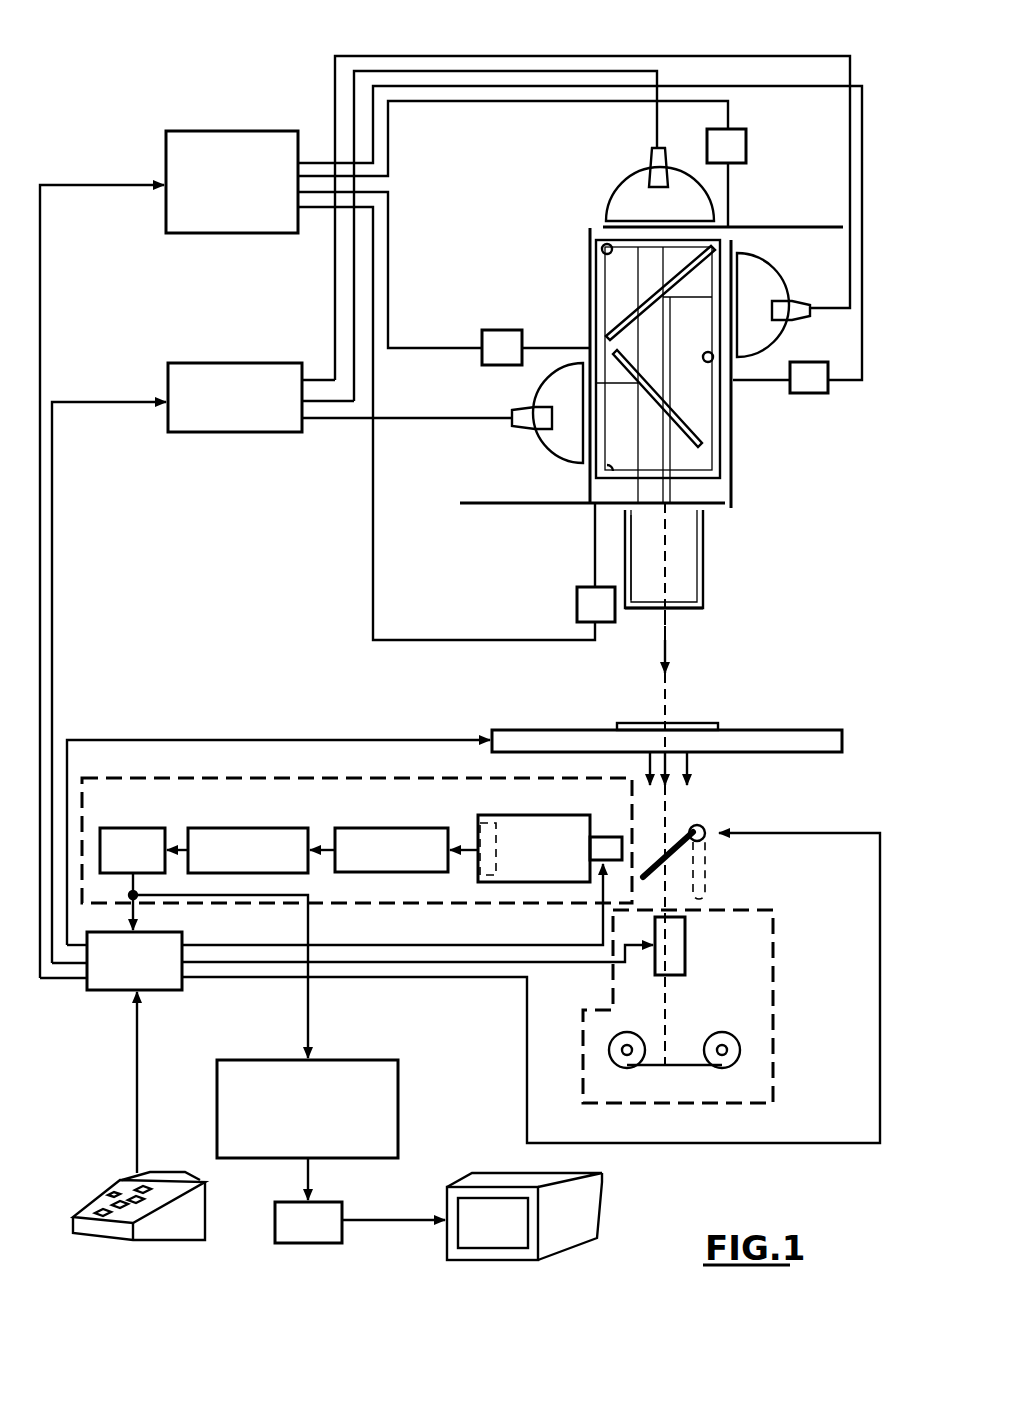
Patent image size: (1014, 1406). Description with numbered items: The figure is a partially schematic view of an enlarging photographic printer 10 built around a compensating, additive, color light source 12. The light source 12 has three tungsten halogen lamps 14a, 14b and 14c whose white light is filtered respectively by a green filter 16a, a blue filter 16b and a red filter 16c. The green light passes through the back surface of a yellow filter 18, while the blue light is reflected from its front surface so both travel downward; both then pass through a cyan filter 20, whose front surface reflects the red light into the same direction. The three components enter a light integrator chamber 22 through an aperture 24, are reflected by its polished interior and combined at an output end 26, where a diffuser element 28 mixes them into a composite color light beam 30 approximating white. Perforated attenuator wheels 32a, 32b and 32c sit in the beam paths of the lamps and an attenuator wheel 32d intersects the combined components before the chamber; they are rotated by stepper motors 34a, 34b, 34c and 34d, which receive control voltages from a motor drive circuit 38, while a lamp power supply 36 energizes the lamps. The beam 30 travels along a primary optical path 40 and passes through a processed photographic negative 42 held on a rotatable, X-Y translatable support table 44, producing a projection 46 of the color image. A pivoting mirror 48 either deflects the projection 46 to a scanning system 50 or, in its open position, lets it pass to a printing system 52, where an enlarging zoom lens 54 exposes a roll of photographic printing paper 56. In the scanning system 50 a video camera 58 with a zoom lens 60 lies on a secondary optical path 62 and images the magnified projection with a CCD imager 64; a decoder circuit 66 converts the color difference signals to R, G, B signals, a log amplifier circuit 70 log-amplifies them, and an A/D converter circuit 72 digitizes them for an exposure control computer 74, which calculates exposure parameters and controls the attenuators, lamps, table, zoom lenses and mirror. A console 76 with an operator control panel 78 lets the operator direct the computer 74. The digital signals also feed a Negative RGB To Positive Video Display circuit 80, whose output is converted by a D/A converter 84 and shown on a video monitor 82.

The enlarging photographic printer 10 is at (232, 38).
The compensating additive color light source 12 is at (842, 464).
The lamp 14a is at (630, 186).
The lamp 14b is at (765, 280).
The lamp 14c is at (540, 400).
The green filter 16a is at (604, 247).
The blue filter 16b is at (775, 356).
The red filter 16c is at (605, 479).
The yellow filter 18 is at (633, 316).
The cyan filter 20 is at (695, 434).
The light integrator chamber 22 is at (705, 560).
The aperture 24 is at (690, 533).
The output end 26 is at (704, 606).
The diffuser element 28 is at (678, 612).
The composite color light beam 30 is at (663, 642).
The attenuator wheel 32a is at (755, 228).
The attenuator wheel 32b is at (735, 460).
The attenuator wheel 32c is at (590, 323).
The attenuator wheel 32d is at (470, 506).
The stepper motor 34a is at (746, 146).
The stepper motor 34b is at (822, 394).
The stepper motor 34c is at (492, 330).
The stepper motor 34d is at (577, 606).
The lamp power supply 36 is at (212, 432).
The motor drive circuit 38 is at (213, 131).
The primary optical path 40 is at (668, 708).
The processed photographic negative 42 is at (622, 722).
The support table 44 is at (790, 728).
The projection 46 is at (700, 784).
The pivoting mirror 48 is at (678, 828).
The scanning system 50 is at (243, 777).
The printing system 52 is at (775, 987).
The enlarging zoom lens 54 is at (688, 942).
The roll of photographic printing paper 56 is at (687, 1063).
The video camera 58 is at (520, 815).
The zoom lens 60 is at (609, 837).
The secondary optical path 62 is at (647, 847).
The CCD imager 64 is at (487, 815).
The decoder circuit 66 is at (350, 828).
The log amplifier circuit 70 is at (222, 828).
The A/D converter circuit 72 is at (118, 828).
The exposure control computer 74 is at (180, 935).
The console 76 is at (152, 1176).
The operator control panel 78 is at (110, 1185).
The Negative RGB To Positive Video Display circuit 80 is at (355, 1060).
The video monitor 82 is at (490, 1178).
The D/A converter 84 is at (348, 1202).